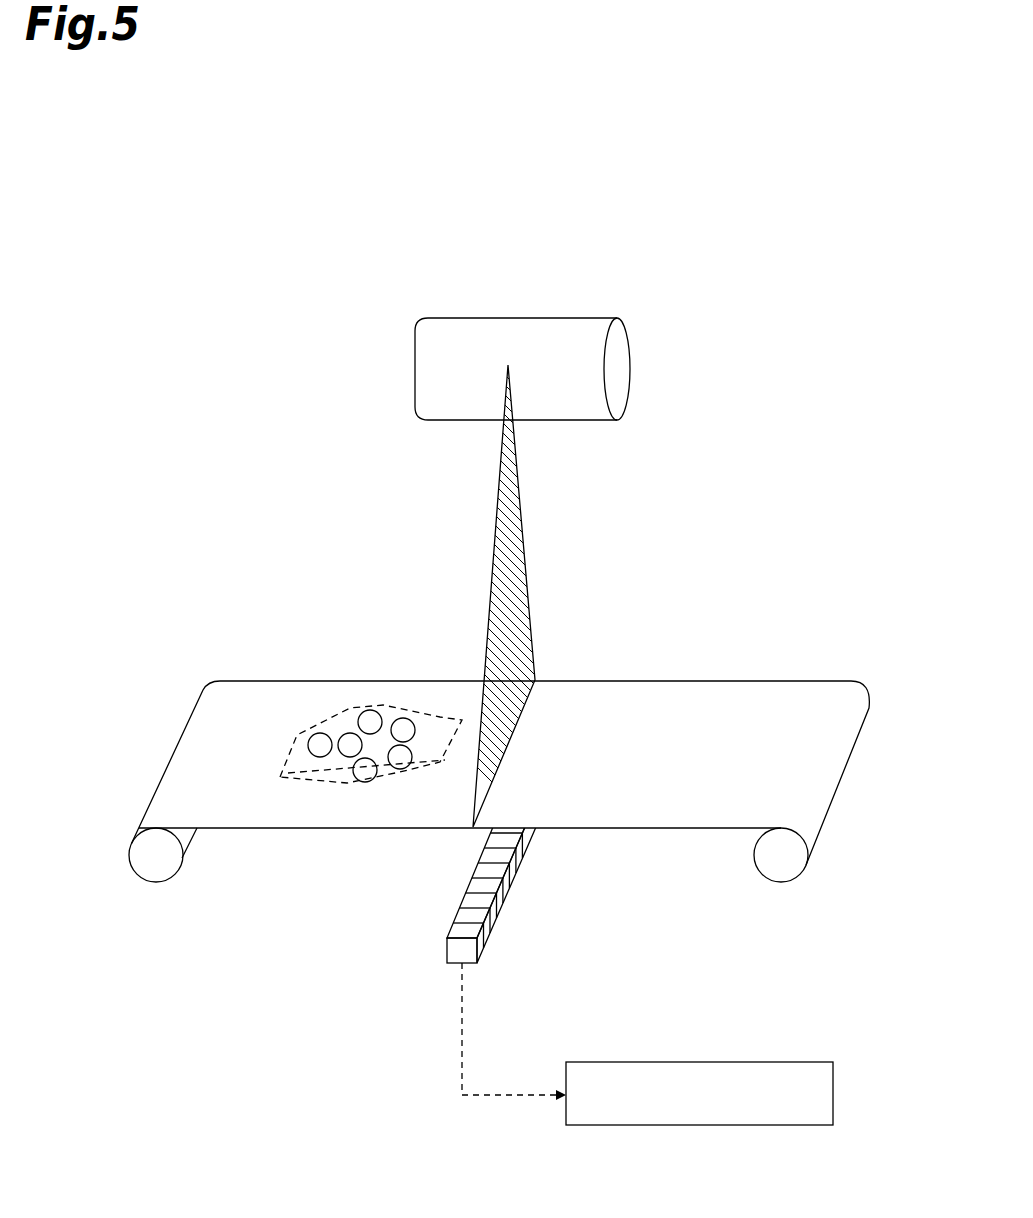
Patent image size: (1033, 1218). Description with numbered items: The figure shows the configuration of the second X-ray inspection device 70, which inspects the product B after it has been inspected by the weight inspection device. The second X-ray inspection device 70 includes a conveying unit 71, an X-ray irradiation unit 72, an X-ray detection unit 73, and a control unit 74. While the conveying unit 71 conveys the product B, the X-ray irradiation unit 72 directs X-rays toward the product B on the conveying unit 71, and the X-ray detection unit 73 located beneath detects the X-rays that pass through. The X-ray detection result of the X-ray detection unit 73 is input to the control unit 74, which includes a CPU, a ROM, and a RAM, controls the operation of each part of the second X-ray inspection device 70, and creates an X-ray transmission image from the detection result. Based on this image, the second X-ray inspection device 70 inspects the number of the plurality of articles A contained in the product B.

The second X-ray inspection device 70 is at (734, 189).
The conveying unit 71 is at (262, 700).
The X-ray irradiation unit 72 is at (569, 325).
The X-ray detection unit 73 is at (503, 898).
The control unit 74 is at (762, 1062).
The articles A is at (372, 711).
The product B is at (341, 706).